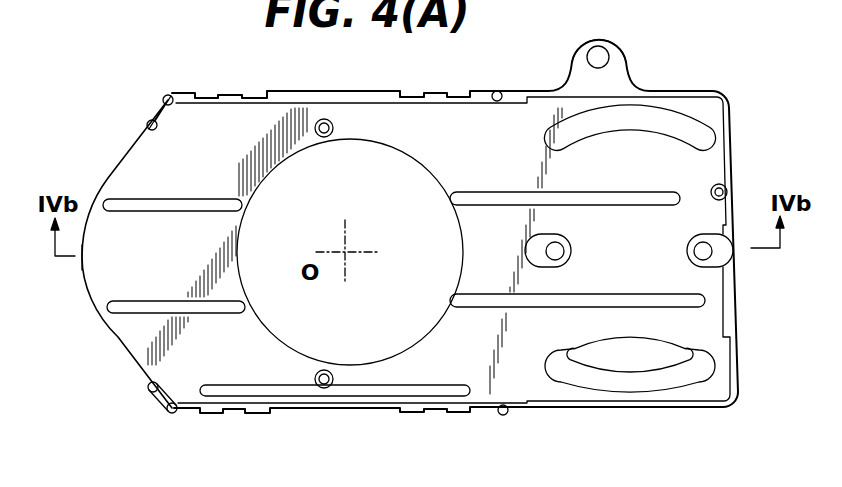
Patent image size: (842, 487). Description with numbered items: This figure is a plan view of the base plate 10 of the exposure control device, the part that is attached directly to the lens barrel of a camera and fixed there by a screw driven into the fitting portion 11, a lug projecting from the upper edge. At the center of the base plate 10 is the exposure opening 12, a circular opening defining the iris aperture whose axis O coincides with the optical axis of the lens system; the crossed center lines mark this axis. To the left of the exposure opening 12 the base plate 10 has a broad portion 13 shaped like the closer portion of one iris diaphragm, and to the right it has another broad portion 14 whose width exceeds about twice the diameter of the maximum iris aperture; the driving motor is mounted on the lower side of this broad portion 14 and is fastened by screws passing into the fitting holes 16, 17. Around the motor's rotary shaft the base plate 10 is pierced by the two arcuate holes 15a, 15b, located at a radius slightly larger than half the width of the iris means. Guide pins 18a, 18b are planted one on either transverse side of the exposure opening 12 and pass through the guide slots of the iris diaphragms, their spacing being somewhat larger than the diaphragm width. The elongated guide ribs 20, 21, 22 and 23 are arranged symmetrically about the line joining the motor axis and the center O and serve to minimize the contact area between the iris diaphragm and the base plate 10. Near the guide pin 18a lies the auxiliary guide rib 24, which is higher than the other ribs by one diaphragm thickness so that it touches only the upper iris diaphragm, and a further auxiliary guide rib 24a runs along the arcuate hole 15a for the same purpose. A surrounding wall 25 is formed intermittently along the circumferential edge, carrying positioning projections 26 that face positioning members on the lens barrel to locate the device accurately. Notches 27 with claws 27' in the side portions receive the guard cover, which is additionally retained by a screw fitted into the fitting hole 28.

The base plate 10 is at (741, 101).
The fitting portion 11 is at (612, 47).
The exposure opening 12 is at (383, 167).
The broad portion 13 is at (157, 262).
The broad portion 14 is at (520, 343).
The arcuate hole 15a is at (616, 383).
The arcuate hole 15b is at (648, 121).
The fitting hole 16 is at (562, 251).
The fitting hole 17 is at (698, 253).
The guide pin 18a is at (328, 390).
The guide pin 18b is at (331, 121).
The guide rib 20 is at (482, 301).
The guide rib 21 is at (483, 200).
The guide rib 22 is at (128, 308).
The guide rib 23 is at (126, 202).
The auxiliary guide rib 24 is at (415, 398).
The auxiliary guide rib 24a is at (665, 363).
The surrounding wall 25 is at (294, 90).
The positioning projection 26 is at (164, 98).
The notch 27 is at (299, 253).
The claw 27' is at (353, 253).
The fitting hole 28 is at (712, 189).